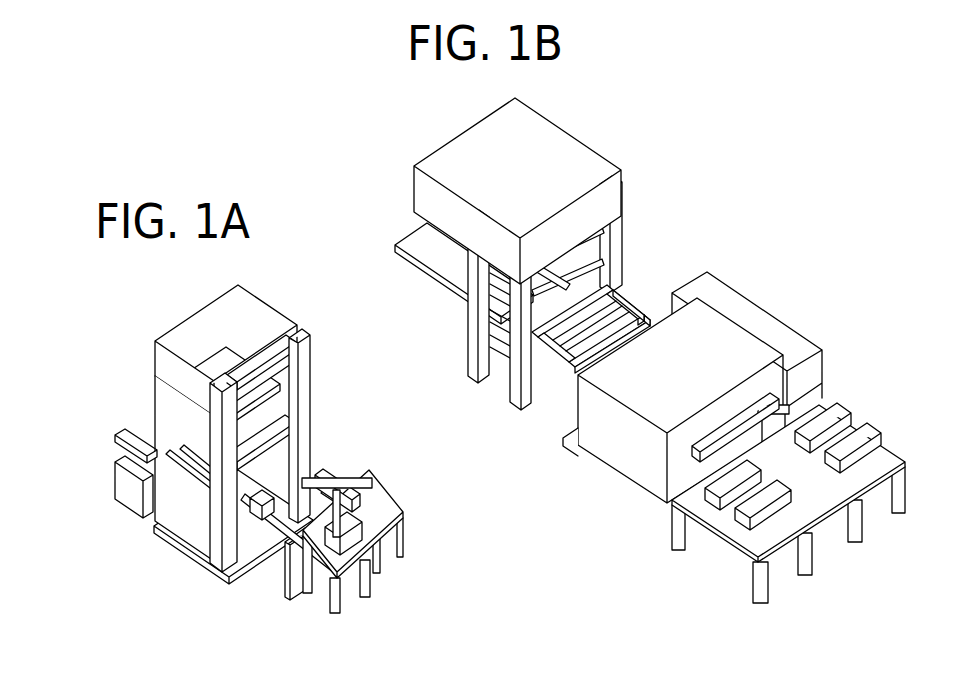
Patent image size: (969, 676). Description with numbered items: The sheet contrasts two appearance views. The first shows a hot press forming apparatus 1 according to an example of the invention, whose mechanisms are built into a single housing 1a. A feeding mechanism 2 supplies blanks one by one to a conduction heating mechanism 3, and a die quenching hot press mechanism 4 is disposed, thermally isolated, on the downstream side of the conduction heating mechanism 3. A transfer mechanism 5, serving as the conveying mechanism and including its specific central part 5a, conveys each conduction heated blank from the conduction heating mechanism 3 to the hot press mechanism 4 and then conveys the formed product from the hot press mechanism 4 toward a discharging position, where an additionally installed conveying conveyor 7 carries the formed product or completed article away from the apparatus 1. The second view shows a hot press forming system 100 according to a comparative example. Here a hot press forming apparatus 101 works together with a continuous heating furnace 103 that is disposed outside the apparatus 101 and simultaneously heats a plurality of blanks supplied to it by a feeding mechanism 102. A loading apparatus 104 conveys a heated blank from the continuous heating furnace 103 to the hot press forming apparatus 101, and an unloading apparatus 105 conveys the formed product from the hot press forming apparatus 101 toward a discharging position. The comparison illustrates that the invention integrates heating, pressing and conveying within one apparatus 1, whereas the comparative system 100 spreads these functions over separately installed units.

In FIG. 1A, the hot press forming apparatus 1 is at (300, 288).
In FIG. 1A, the housing 1a is at (180, 388).
In FIG. 1A, the feeding mechanism 2 is at (350, 555).
In FIG. 1A, the conduction heating mechanism 3 is at (253, 528).
In FIG. 1A, the hot press mechanism 4 is at (183, 516).
In FIG. 1A, the transfer mechanism 5 is at (285, 548).
In FIG. 1A, the central part of conveying mechanism 5a is at (207, 497).
In FIG. 1A, the conveying conveyor 7 is at (143, 437).
In FIG. 1B, the hot press forming system 100 is at (721, 137).
In FIG. 1B, the hot press forming apparatus 101 is at (503, 357).
In FIG. 1B, the feeding mechanism 102 is at (713, 513).
In FIG. 1B, the continuous heating furnace 103 is at (637, 458).
In FIG. 1B, the loading apparatus 104 is at (575, 367).
In FIG. 1B, the unloading apparatus 105 is at (447, 290).